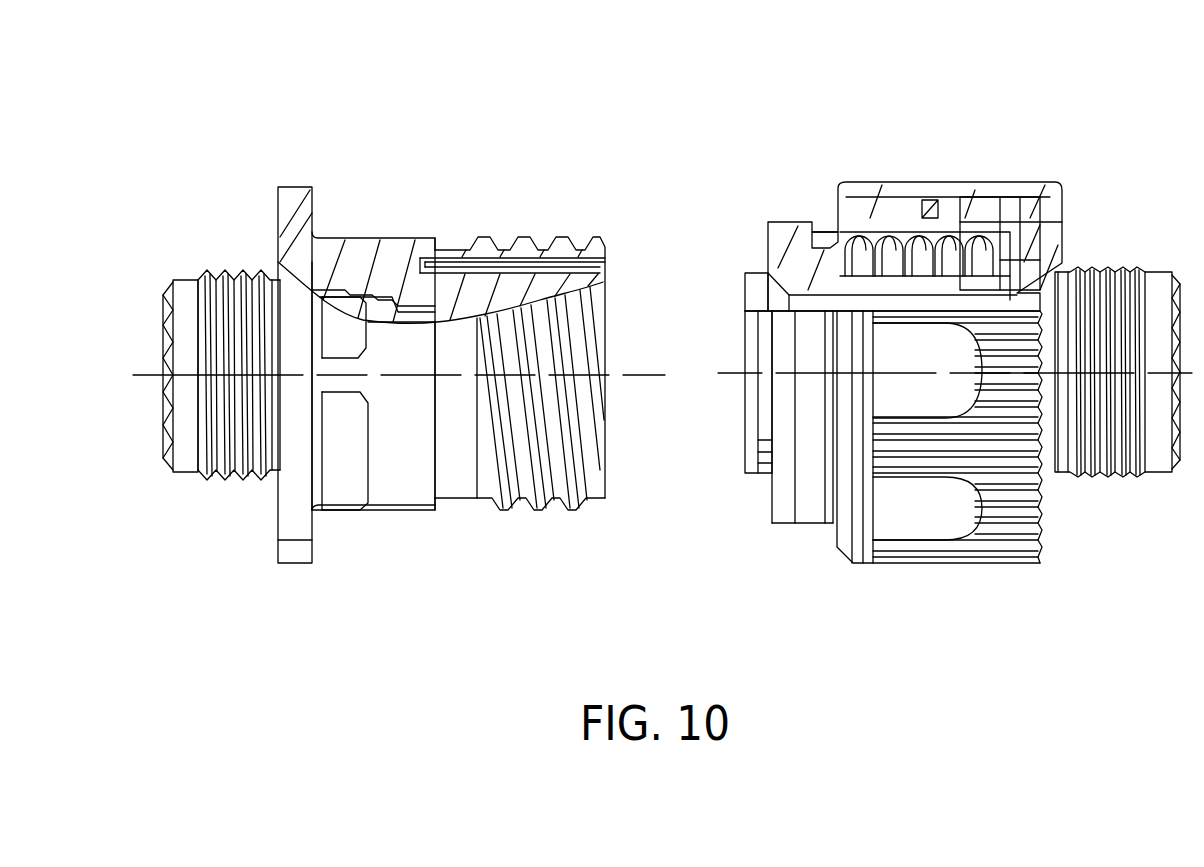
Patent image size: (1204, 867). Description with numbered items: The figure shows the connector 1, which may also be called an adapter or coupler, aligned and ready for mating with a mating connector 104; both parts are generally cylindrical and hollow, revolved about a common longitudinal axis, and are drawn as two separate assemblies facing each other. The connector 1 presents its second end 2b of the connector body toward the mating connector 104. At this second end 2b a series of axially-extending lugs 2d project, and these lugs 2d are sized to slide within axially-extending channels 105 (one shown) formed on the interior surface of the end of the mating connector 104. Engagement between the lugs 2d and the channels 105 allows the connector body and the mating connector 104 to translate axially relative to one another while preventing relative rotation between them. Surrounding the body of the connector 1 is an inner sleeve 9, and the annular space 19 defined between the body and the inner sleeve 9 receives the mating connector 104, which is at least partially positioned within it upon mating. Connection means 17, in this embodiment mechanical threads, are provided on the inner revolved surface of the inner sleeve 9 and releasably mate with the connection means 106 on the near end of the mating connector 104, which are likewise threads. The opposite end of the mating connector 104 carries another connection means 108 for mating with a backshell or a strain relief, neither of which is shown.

The connector 1 is at (868, 584).
The second end of connector body 2b is at (752, 270).
The axially-extending lugs 2d is at (790, 233).
The inner sleeve 9 is at (830, 233).
The connection means 17 is at (885, 240).
The annular space 19 is at (812, 237).
The mating connector 104 is at (374, 219).
The axially-extending channels 105 is at (572, 281).
The connection means 106 is at (520, 240).
The connection means 108 is at (222, 273).